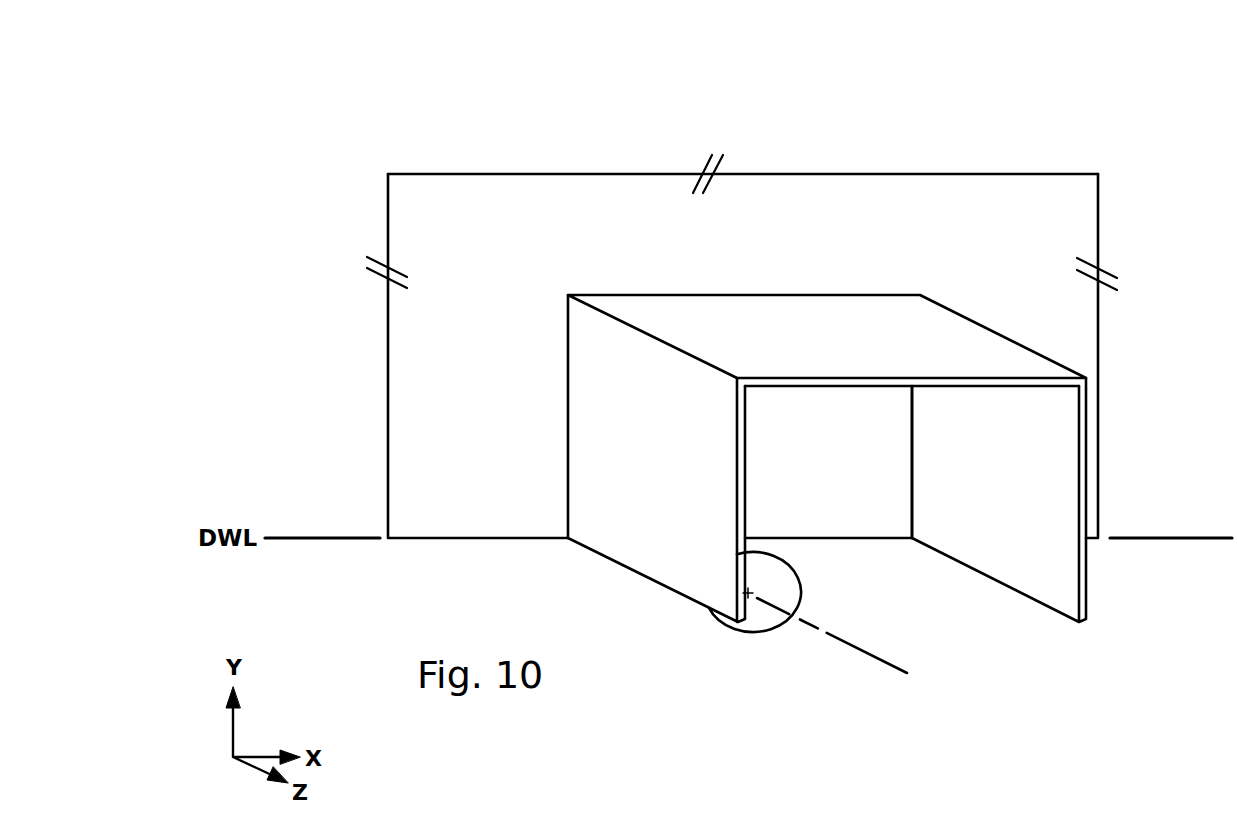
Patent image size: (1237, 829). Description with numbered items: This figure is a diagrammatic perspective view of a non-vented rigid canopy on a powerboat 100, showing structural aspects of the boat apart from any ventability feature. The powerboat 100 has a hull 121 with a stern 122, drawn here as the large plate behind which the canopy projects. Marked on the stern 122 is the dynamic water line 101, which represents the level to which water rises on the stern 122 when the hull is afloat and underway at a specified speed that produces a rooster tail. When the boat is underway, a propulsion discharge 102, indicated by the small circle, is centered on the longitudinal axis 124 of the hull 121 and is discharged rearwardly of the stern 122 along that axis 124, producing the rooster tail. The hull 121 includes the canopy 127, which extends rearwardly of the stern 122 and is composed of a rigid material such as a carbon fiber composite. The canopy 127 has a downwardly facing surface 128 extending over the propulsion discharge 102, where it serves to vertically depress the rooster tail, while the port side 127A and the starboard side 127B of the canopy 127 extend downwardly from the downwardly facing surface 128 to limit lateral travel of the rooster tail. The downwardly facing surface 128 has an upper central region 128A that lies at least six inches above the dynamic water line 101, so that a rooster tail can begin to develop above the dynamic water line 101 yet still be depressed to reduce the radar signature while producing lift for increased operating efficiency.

The powerboat 100 is at (739, 347).
The dynamic water line 101 is at (1153, 540).
The propulsion discharge 102 is at (801, 592).
The hull 121 is at (388, 323).
The stern 122 is at (1081, 183).
The longitudinal axis 124 is at (903, 668).
The canopy 127 is at (877, 467).
The port side 127A is at (681, 576).
The starboard side 127B is at (1087, 607).
The downwardly facing surface 128 is at (966, 462).
The upper central region 128A is at (897, 386).